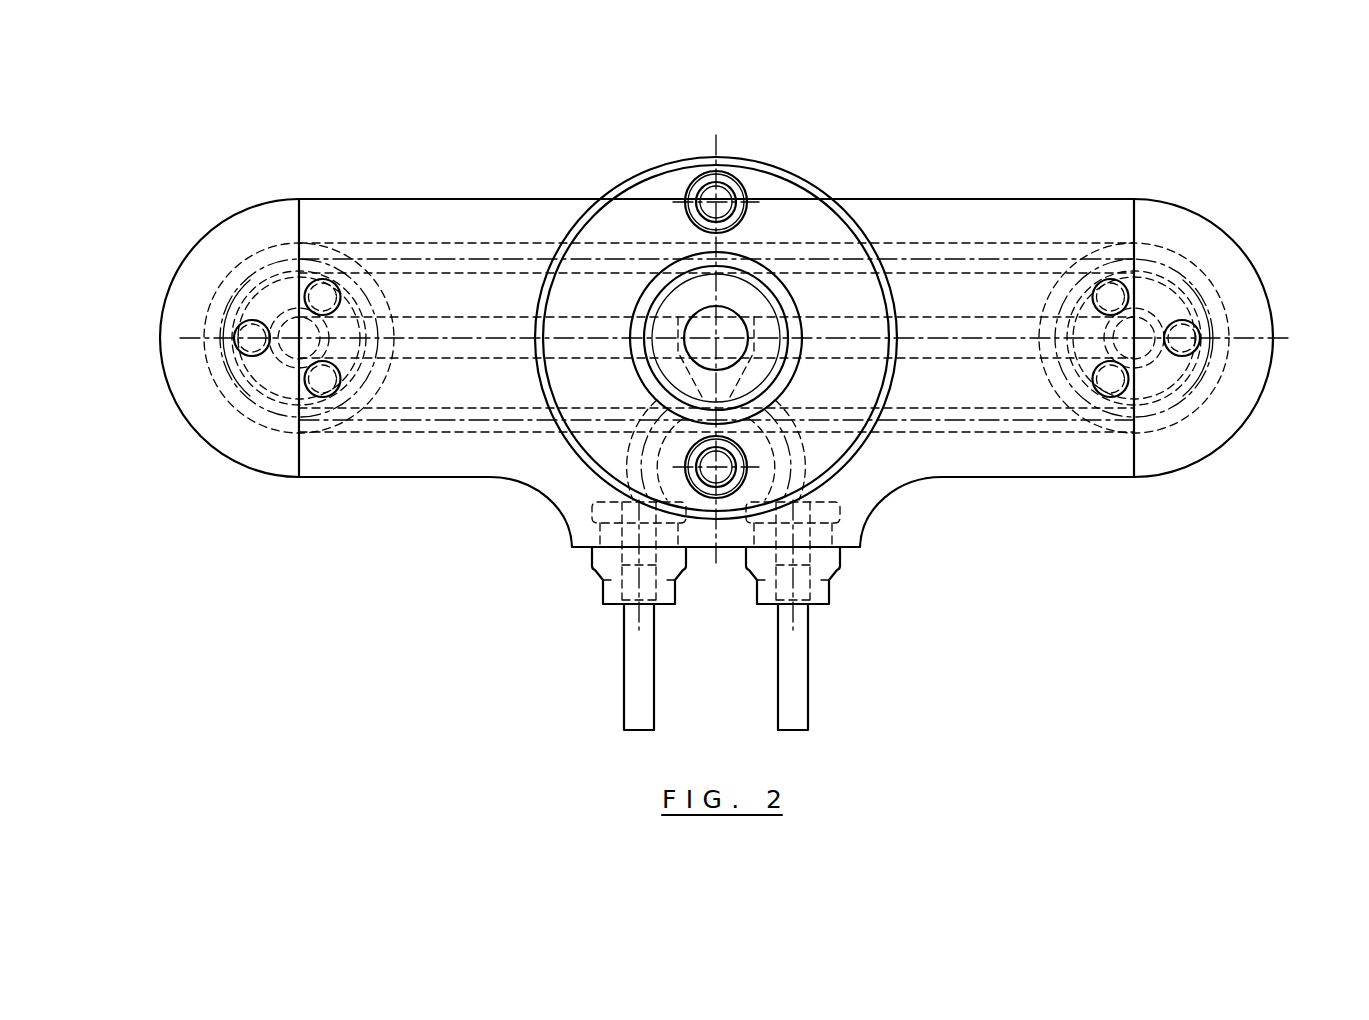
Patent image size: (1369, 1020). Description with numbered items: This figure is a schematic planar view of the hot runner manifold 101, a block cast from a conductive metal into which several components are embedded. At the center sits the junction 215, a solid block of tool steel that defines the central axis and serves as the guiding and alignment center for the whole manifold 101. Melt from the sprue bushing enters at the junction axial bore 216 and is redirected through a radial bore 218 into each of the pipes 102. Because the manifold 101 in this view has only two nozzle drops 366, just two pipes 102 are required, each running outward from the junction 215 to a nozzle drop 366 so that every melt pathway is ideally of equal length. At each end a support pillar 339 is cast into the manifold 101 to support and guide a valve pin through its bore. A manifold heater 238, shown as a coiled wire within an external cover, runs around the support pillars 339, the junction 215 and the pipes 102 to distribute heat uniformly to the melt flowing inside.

The hot runner manifold 101 is at (283, 173).
The pipes 102 is at (415, 320).
The junction 215 is at (738, 293).
The axial bore 216 is at (713, 337).
The radial bore 218 is at (748, 378).
The manifold heater 238 is at (918, 247).
The support pillar 339 is at (255, 268).
The nozzle drops 366 is at (217, 372).